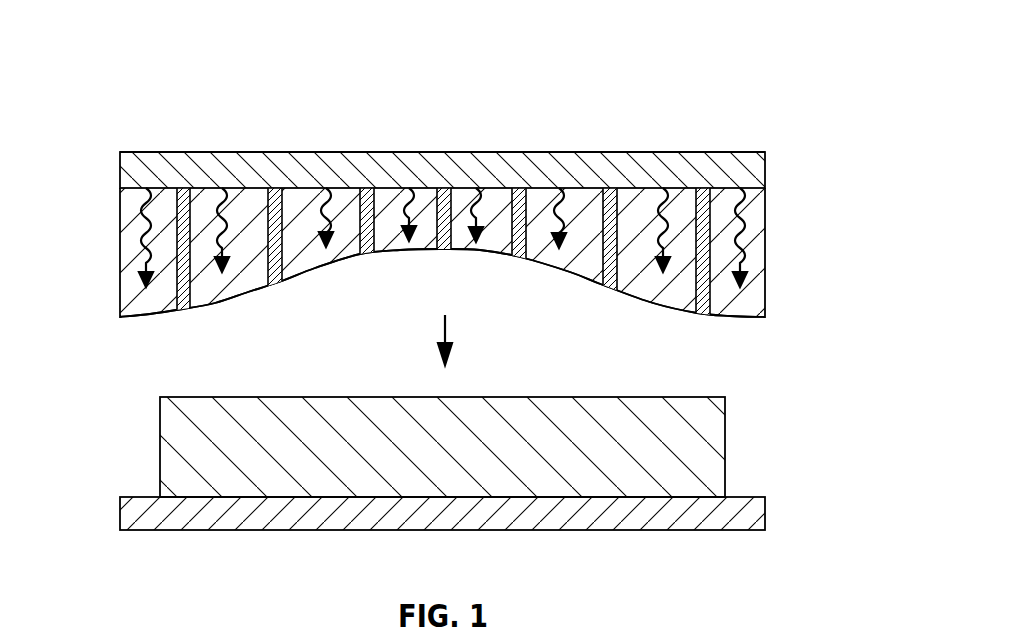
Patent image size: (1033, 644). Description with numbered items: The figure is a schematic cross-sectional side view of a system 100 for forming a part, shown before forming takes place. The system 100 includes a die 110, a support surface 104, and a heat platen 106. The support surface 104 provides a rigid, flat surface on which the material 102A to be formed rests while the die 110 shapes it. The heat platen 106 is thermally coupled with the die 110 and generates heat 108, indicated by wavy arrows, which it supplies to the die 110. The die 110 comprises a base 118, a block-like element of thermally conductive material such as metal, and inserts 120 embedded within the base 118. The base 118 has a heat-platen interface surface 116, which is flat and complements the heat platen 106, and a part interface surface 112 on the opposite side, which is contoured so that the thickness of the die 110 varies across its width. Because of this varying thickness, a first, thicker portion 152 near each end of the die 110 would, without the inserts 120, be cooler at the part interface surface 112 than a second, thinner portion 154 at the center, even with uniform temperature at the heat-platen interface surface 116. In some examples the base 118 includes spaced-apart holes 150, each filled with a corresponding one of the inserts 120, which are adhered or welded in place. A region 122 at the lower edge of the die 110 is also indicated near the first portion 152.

The system 100 is at (717, 63).
The material 102A is at (710, 428).
The support surface 104 is at (693, 515).
The heat platen 106 is at (677, 172).
The heat 108 is at (140, 232).
The die 110 is at (757, 235).
The part interface surface 112 is at (313, 277).
The heat-platen interface surface 116 is at (337, 165).
The base 118 is at (758, 280).
The inserts 120 is at (189, 187).
The bottom edge portion 122 is at (167, 293).
The holes 150 is at (184, 301).
The first portion 152 is at (142, 318).
The second portion 154 is at (572, 272).